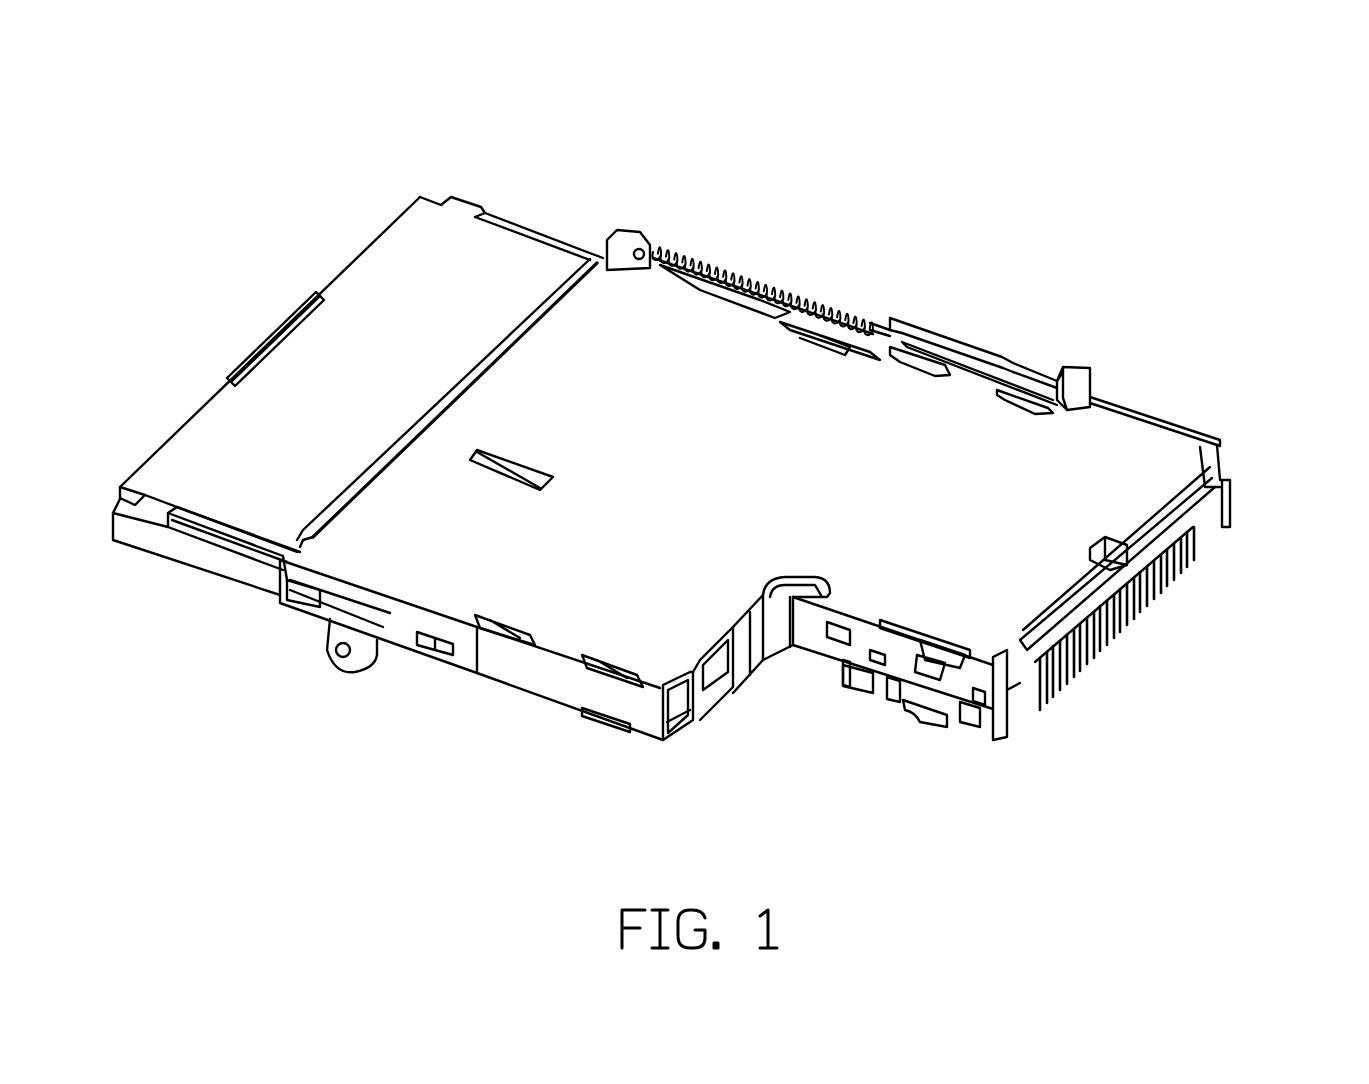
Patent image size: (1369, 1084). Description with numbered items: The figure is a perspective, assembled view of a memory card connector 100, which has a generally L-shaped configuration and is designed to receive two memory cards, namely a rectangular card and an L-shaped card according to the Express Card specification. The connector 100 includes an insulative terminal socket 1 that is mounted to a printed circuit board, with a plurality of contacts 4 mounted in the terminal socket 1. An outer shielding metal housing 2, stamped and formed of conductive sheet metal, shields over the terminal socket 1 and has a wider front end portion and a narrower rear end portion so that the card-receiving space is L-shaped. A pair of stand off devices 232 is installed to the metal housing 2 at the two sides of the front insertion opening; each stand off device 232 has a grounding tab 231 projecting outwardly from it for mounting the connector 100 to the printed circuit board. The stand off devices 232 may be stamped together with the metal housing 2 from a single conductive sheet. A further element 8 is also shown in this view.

The memory card connector 100 is at (701, 102).
The insulative terminal socket 1 is at (1220, 513).
The shielding metal housing 2 is at (853, 410).
The contacts 4 is at (1173, 583).
The soldering leg 8 is at (907, 707).
The grounding tab 231 is at (327, 660).
The stand off devices 232 is at (400, 640).